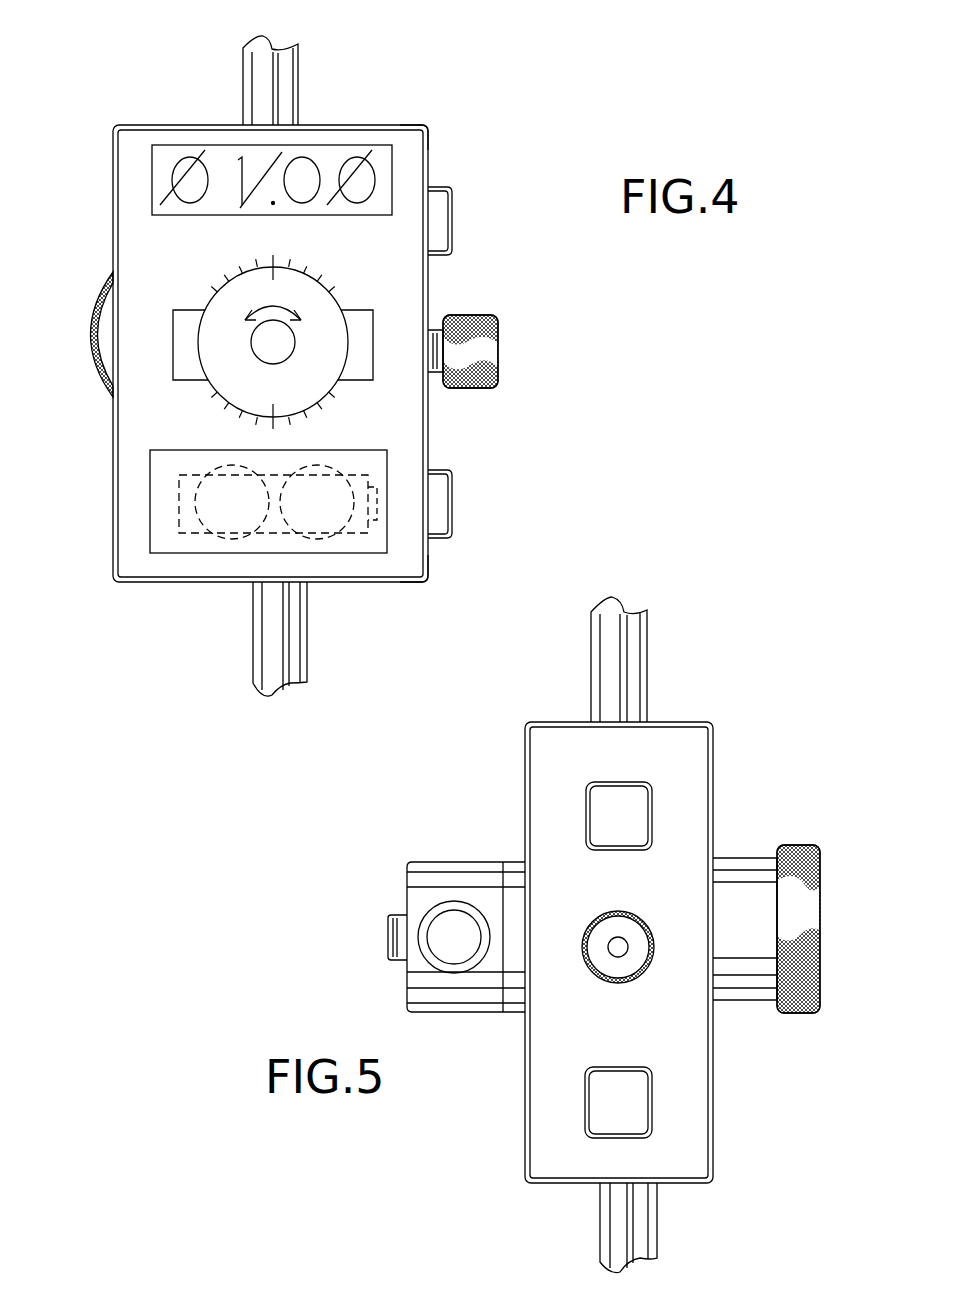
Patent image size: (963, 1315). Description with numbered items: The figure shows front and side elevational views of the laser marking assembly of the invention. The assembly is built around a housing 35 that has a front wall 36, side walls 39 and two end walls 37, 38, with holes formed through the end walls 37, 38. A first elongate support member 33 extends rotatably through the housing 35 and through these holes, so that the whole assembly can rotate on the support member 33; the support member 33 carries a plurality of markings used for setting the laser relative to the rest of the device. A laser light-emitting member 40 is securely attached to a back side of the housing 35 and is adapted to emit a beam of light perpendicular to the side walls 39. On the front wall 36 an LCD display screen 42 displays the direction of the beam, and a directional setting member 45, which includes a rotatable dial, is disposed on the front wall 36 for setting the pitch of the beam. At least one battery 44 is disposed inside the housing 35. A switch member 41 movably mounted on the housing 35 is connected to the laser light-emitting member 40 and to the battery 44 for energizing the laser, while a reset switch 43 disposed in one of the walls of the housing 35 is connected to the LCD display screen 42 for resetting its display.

In FIG. 4, the first elongate support member 33 is at (290, 637).
In FIG. 5, the first elongate support member 33 is at (622, 657).
In FIG. 4, the housing 35 is at (390, 420).
In FIG. 5, the housing 35 is at (680, 775).
In FIG. 4, the front wall 36 is at (150, 318).
In FIG. 4, the end wall 37 is at (405, 125).
In FIG. 4, the end wall 38 is at (392, 583).
In FIG. 5, the side wall 39 is at (682, 1052).
In FIG. 4, the laser light-emitting member 40 is at (465, 345).
In FIG. 5, the laser light-emitting member 40 is at (460, 943).
In FIG. 4, the switch member 41 is at (438, 513).
In FIG. 5, the switch member 41 is at (607, 1112).
In FIG. 4, the LCD display screen 42 is at (332, 158).
In FIG. 4, the reset switch 43 is at (443, 213).
In FIG. 5, the reset switch 43 is at (595, 816).
In FIG. 4, the battery 44 is at (232, 510).
In FIG. 4, the directional setting member 45 is at (335, 310).
In FIG. 5, the directional setting member 45 is at (808, 920).